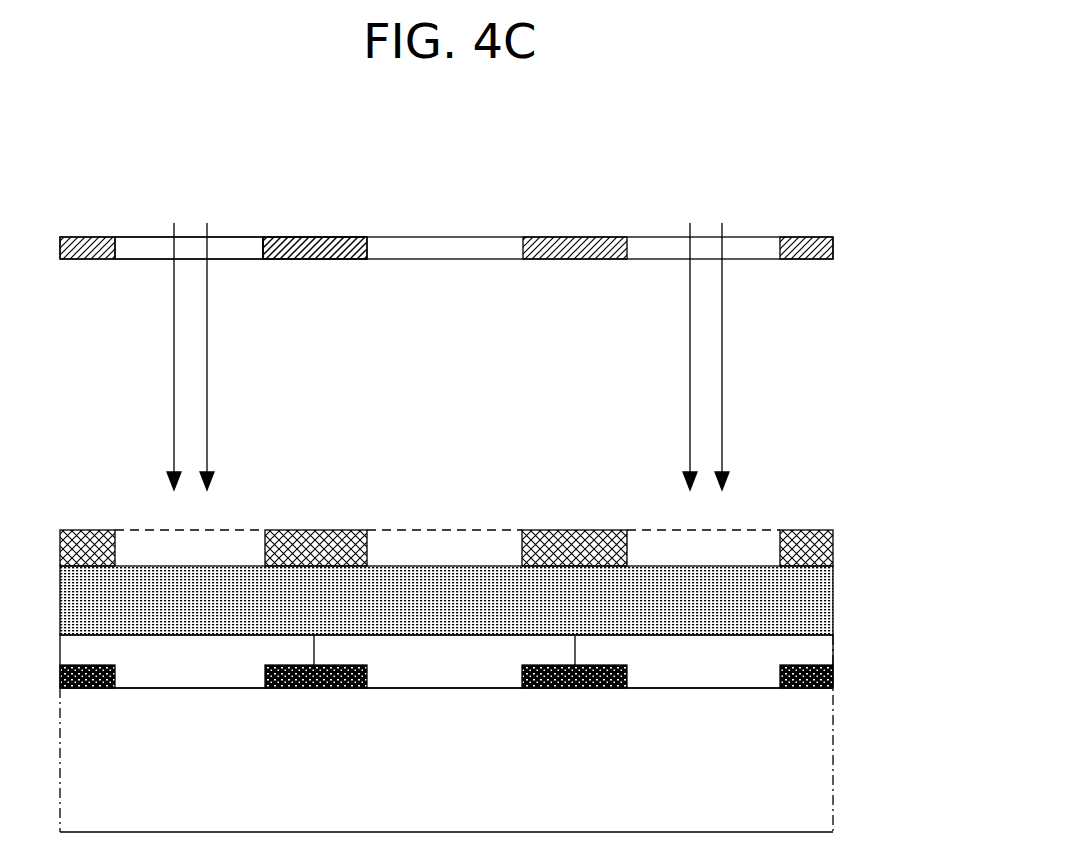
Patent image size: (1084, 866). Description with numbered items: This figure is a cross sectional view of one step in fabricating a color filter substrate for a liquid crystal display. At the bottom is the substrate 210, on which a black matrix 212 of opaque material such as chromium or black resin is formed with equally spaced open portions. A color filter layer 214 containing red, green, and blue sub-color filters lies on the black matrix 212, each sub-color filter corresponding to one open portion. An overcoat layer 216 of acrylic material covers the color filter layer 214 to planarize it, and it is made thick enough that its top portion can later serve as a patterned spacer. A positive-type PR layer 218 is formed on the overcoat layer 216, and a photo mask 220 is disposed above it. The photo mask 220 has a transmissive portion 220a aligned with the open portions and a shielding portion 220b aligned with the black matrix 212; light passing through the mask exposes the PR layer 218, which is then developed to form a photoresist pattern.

The substrate 210 is at (475, 778).
The black matrix 212 is at (807, 738).
The color filter layer 214 is at (822, 664).
The overcoat layer 216 is at (833, 567).
The PR layer 218 is at (717, 602).
The photo mask 220 is at (833, 239).
The transmissive portion 220a is at (237, 248).
The shielding portion 220b is at (317, 238).